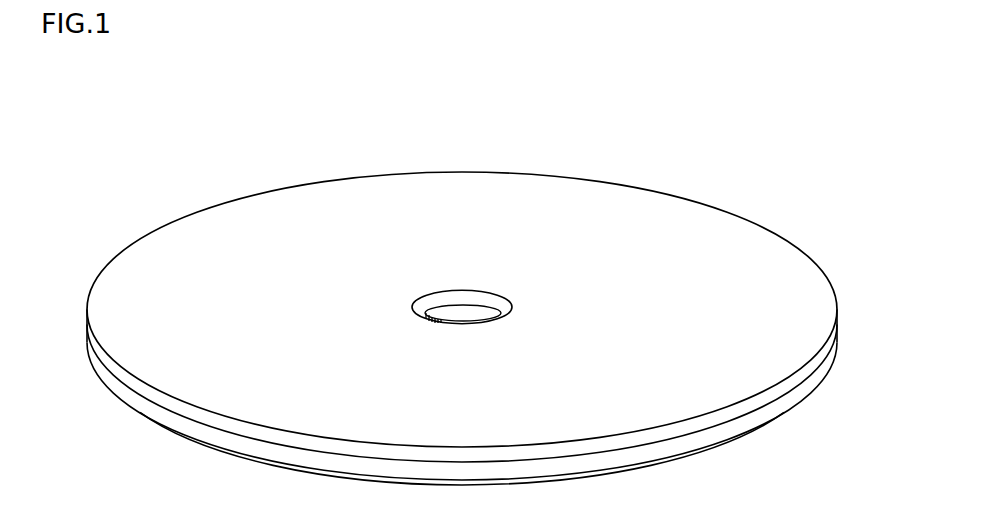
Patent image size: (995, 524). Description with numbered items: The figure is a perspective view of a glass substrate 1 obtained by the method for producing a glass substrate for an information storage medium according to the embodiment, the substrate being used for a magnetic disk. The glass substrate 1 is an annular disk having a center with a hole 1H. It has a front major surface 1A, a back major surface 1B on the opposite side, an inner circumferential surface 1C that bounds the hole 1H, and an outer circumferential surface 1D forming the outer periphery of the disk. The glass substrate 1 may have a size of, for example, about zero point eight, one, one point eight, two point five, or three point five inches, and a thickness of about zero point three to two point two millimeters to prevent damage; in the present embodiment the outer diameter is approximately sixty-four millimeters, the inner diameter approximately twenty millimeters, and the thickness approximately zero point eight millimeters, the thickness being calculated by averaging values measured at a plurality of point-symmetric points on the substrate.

The glass substrate 1 is at (674, 118).
The front major surface 1A is at (703, 227).
The back major surface 1B is at (748, 430).
The inner circumferential surface 1C is at (449, 315).
The outer circumferential surface 1D is at (810, 381).
The hole 1H is at (464, 313).